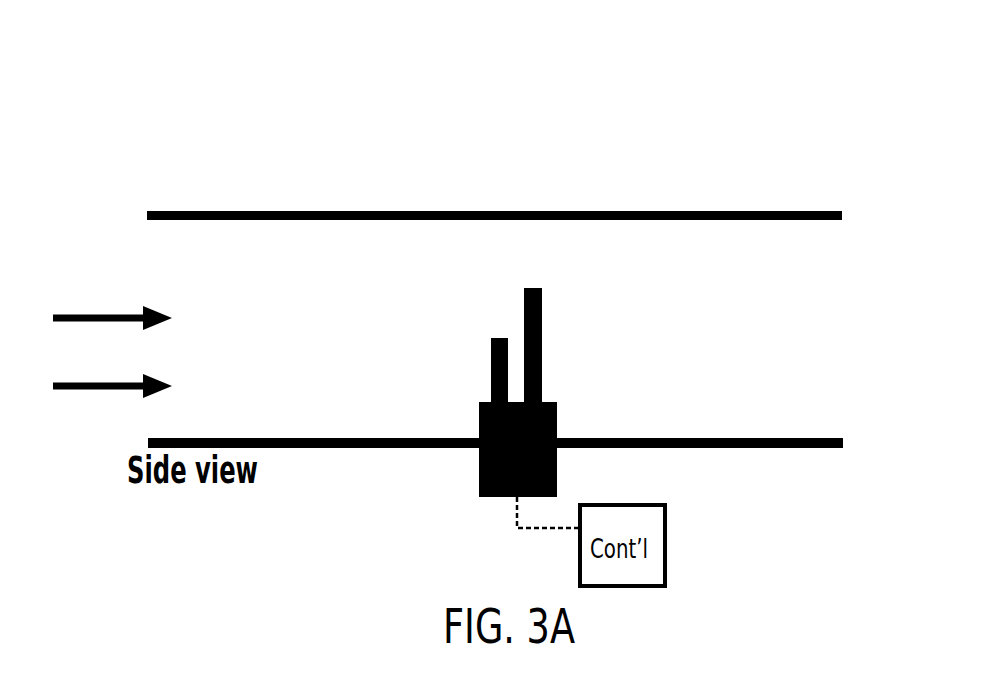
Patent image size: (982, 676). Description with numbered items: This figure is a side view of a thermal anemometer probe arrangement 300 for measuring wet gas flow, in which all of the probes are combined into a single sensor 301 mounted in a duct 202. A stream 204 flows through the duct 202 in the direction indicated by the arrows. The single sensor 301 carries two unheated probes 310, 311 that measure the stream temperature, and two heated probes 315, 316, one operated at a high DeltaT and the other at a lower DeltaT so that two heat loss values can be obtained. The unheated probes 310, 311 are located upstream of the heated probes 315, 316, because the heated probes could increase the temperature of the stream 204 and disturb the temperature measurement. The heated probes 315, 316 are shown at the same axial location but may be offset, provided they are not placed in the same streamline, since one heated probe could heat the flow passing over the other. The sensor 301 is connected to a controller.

The duct 202 is at (162, 213).
The stream 204 is at (110, 317).
The thermal anemometer probe arrangement 300 is at (296, 97).
The single sensor 301 is at (479, 425).
The unheated probe 310 is at (493, 338).
The unheated probe 311 is at (502, 338).
The heated probe 315 is at (533, 288).
The heated probe 316 is at (535, 288).